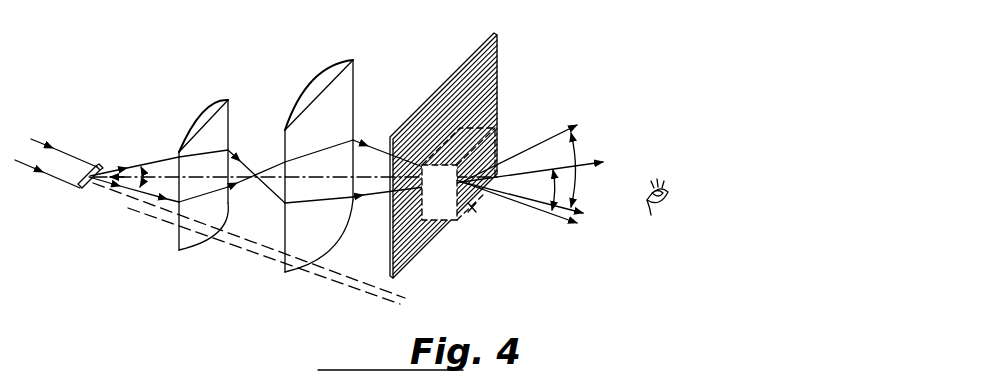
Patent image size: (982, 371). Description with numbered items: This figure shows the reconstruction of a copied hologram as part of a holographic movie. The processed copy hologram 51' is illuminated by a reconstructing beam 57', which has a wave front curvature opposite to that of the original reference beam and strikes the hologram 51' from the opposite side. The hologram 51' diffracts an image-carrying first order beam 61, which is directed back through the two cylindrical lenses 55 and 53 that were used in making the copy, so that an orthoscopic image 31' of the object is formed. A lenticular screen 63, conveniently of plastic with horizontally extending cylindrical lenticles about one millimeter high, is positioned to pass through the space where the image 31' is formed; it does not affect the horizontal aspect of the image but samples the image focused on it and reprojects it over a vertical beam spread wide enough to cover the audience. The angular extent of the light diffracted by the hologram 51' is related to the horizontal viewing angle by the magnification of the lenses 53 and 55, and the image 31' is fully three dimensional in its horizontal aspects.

The reconstructing beam 57' is at (56, 144).
The copy hologram 51' is at (97, 155).
The image-carrying first order beam 61 is at (160, 165).
The cylindrical lens 55 is at (205, 112).
The cylindrical lens 53 is at (342, 75).
The lenticular screen 63 is at (498, 69).
The orthoscopic image 31' is at (458, 200).